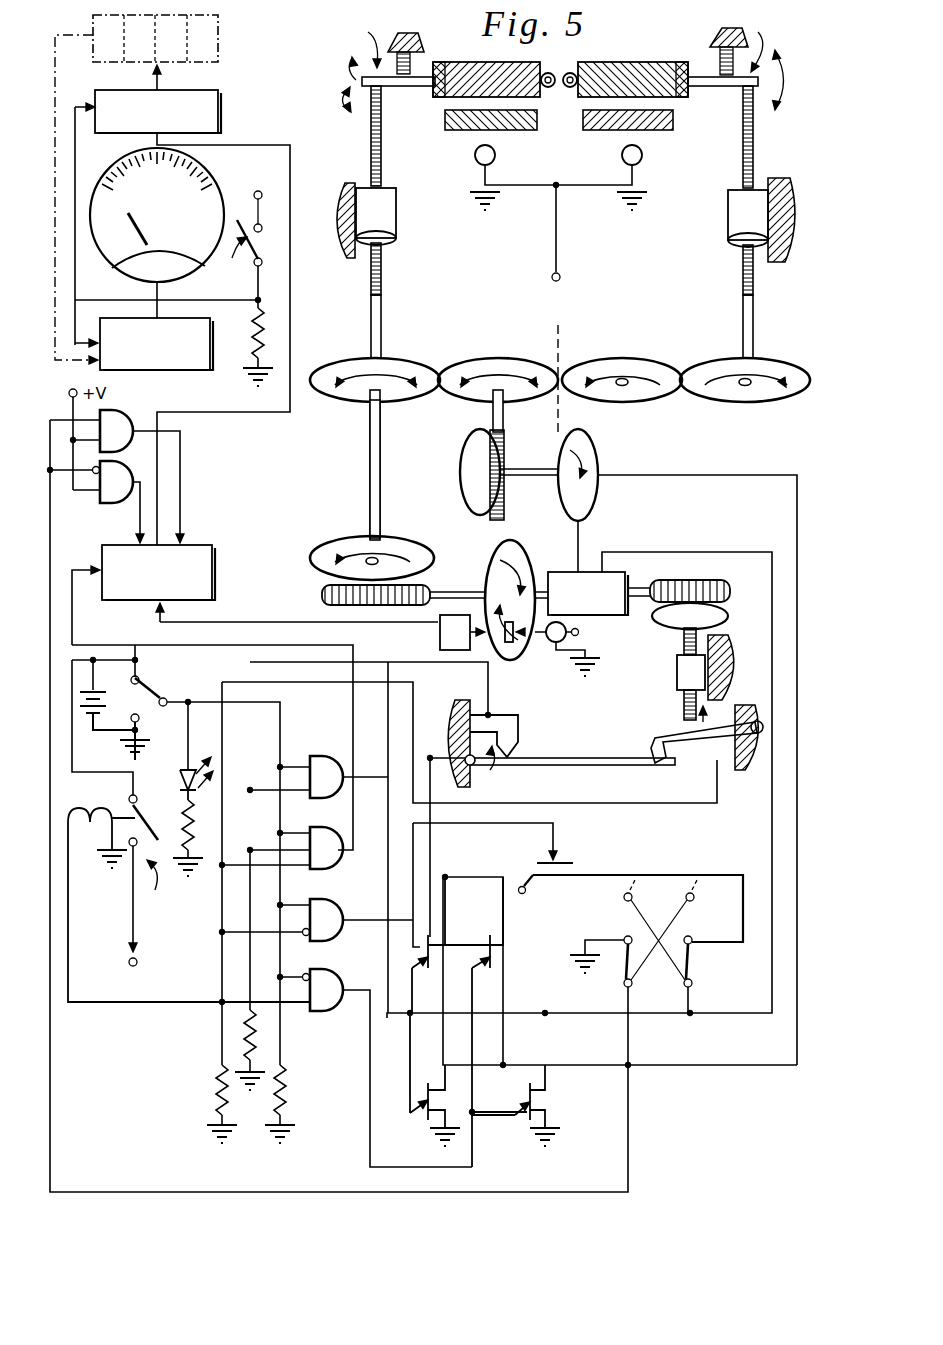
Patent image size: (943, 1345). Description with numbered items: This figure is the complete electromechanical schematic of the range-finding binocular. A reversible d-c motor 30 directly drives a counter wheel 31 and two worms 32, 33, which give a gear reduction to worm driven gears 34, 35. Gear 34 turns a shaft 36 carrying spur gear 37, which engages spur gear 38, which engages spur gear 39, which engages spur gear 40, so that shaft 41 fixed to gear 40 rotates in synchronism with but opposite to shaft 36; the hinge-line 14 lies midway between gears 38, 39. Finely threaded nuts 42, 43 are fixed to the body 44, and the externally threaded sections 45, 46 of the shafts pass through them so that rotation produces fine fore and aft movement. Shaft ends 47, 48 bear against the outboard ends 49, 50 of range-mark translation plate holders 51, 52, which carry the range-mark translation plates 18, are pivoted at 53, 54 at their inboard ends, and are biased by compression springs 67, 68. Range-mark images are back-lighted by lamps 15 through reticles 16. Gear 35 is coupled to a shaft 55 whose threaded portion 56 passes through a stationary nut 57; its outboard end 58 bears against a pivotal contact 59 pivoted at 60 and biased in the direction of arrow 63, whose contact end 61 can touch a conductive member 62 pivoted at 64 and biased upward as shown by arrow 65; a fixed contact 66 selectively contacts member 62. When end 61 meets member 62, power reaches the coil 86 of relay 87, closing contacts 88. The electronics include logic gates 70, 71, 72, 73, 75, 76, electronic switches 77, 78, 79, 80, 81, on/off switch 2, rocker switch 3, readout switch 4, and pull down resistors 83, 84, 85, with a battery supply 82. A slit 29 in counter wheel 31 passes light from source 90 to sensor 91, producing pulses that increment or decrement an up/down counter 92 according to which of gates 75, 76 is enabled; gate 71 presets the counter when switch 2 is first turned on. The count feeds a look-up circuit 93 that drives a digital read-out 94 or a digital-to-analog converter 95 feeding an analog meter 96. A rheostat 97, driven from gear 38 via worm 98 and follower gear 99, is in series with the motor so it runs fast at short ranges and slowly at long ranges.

The on/off switch 2 is at (150, 675).
The rocker switch 3 is at (620, 922).
The switch for selectively activating range readout 4 is at (249, 278).
The hinge-line 14 is at (563, 352).
The lamp 15 is at (475, 160).
The reticle 16 is at (537, 122).
The range-mark translation plate 18 is at (478, 56).
The slit 29 is at (512, 644).
The reversible d-c motor 30 is at (590, 572).
The counter wheel 31 is at (486, 556).
The worm 32 is at (322, 595).
The worm 33 is at (700, 580).
The worm driven gear 34 is at (340, 530).
The worm driven gear 35 is at (740, 612).
The shaft 36 is at (381, 440).
The spur gear 37 is at (395, 360).
The spur gear 38 is at (520, 338).
The spur gear 39 is at (640, 358).
The spur gear 40 is at (730, 338).
The shaft 41 is at (742, 285).
The internally threaded nut 42 is at (396, 225).
The internally threaded nut 43 is at (728, 225).
The body 44 is at (342, 212).
The threaded section 45 is at (381, 155).
The threaded section 46 is at (742, 150).
The shaft end 47 is at (368, 100).
The shaft end 48 is at (756, 95).
The outboard end 49 is at (355, 80).
The outboard end 50 is at (770, 38).
The range-mark translation plate holder 51 is at (363, 41).
The range-mark translation plate holder 52 is at (761, 42).
The pivot 53 is at (548, 72).
The pivot 54 is at (570, 72).
The shaft 55 is at (683, 640).
The threaded portion 56 is at (683, 700).
The stationary nut 57 is at (676, 675).
The outboard end 58 is at (690, 740).
The pivotal contact 59 is at (700, 735).
The pivot 60 is at (748, 760).
The contact end 61 is at (645, 745).
The conductive member 62 is at (600, 768).
The arrow 63 is at (712, 735).
The pivot 64 is at (450, 745).
The arrow 65 is at (486, 772).
The contact 66 is at (515, 715).
The compression spring 67 is at (412, 50).
The compression spring 68 is at (718, 48).
The logic gate 70 is at (335, 758).
The logic gate 71 is at (338, 830).
The logic gate 72 is at (338, 902).
The logic gate 73 is at (328, 972).
The logic gate 75 is at (124, 428).
The logic gate 76 is at (126, 476).
The electronic switch 77 is at (565, 855).
The electronic switch 78 is at (408, 943).
The electronic switch 79 is at (486, 920).
The electronic switch 80 is at (418, 1118).
The electronic switch 81 is at (525, 1118).
The battery 82 is at (112, 680).
The pull down resistor 83 is at (218, 1068).
The pull down resistor 84 is at (254, 1050).
The pull down resistor 85 is at (285, 1100).
The coil 86 is at (112, 810).
The relay 87 is at (144, 917).
The contacts 88 is at (152, 822).
The light source 90 is at (553, 644).
The light sensor 91 is at (440, 640).
The up/down counter 92 is at (216, 568).
The look-up circuit 93 is at (222, 105).
The digital read-out 94 is at (218, 50).
The digital-to-analog converter 95 is at (213, 355).
The analog read-out 96 is at (112, 278).
The rheostat 97 is at (605, 457).
The worm 98 is at (505, 445).
The follower gear 99 is at (461, 470).